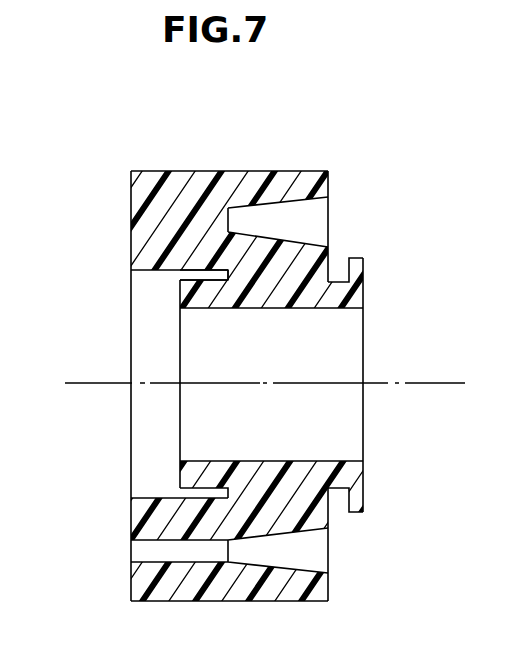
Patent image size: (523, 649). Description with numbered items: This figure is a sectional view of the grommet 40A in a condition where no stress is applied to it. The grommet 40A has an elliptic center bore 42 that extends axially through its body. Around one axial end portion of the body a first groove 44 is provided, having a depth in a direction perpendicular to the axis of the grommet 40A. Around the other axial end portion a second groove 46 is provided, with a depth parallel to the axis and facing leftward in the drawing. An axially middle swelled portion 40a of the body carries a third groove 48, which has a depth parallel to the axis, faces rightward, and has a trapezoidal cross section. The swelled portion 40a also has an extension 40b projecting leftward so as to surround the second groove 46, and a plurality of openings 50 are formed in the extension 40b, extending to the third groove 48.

The grommet 40A is at (261, 348).
The axially middle swelled portion 40a is at (327, 209).
The extension 40b is at (151, 212).
The elliptic center bore 42 is at (308, 310).
The first groove 44 is at (340, 264).
The second groove 46 is at (207, 286).
The third groove 48 is at (290, 212).
The openings 50 is at (141, 540).